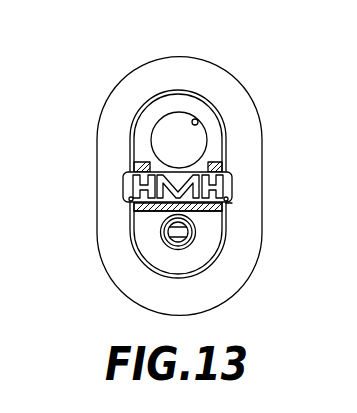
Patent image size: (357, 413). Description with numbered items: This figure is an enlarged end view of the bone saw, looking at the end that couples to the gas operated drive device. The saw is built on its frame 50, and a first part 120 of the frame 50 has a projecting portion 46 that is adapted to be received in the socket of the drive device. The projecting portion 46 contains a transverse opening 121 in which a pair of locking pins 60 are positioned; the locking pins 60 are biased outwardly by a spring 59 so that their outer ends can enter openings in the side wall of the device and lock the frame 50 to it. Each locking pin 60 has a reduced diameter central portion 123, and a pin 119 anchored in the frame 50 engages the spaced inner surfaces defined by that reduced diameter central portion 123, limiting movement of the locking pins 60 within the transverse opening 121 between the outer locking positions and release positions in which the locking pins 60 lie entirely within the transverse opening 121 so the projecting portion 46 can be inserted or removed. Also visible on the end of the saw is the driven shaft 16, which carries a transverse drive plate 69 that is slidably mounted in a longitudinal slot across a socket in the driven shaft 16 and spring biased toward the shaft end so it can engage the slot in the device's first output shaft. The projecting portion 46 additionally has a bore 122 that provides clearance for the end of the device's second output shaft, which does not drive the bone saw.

The frame 50 is at (131, 65).
The bore 122 is at (197, 119).
The projecting portion 46 is at (216, 131).
The first part 120 is at (251, 129).
The reduced diameter central portion 123 is at (143, 160).
The locking pin 60 is at (116, 184).
The transverse opening 121 is at (229, 203).
The pin 119 is at (134, 206).
The driven shaft 16 is at (192, 233).
The drive plate 69 is at (177, 242).
The spring 59 is at (178, 171).